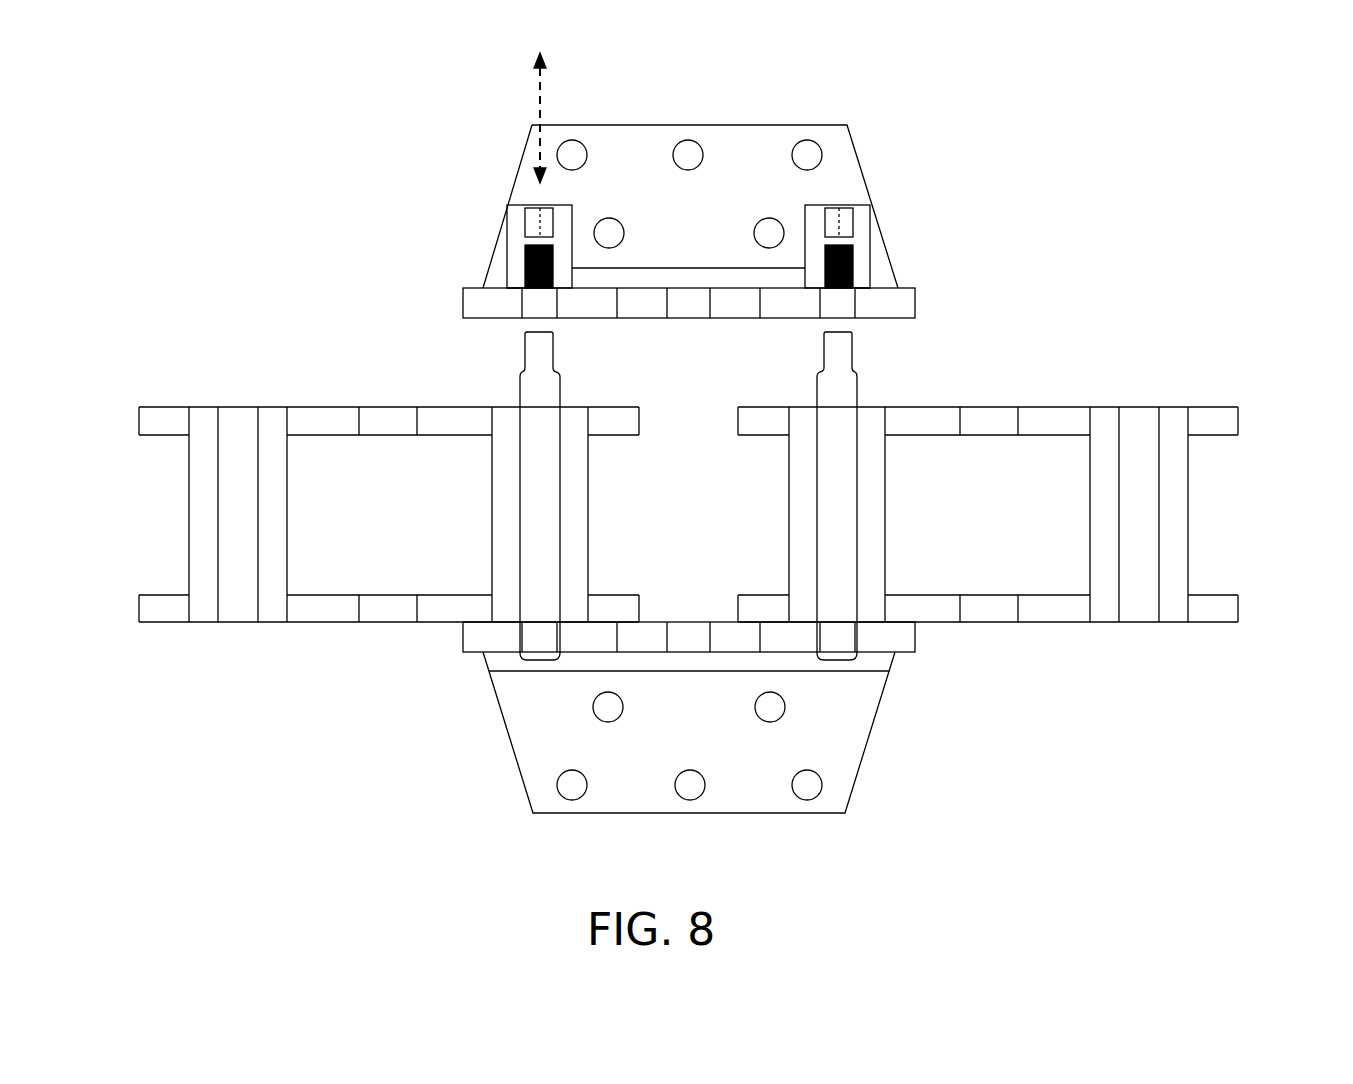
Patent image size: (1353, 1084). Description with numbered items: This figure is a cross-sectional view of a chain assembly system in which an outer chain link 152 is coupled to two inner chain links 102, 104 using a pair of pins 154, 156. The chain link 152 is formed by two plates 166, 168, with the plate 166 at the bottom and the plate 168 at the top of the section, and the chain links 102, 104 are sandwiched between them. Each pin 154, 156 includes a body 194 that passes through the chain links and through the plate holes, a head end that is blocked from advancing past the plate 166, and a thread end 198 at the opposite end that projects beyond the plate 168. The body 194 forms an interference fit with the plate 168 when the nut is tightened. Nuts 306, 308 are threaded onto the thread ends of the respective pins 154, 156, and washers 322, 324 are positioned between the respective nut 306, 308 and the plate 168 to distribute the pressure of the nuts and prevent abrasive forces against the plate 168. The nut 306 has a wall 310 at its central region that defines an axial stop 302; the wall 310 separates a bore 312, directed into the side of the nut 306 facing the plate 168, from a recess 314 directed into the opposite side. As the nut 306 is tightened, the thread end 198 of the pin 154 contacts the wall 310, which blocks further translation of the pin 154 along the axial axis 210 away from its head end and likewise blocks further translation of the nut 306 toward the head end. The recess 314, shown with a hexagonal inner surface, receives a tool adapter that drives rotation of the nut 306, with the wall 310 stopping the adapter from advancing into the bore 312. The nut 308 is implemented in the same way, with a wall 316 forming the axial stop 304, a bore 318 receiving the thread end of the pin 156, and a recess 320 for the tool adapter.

The chain link 102 is at (200, 383).
The chain link 104 is at (1200, 377).
The chain link 152 is at (805, 88).
The pin 154 is at (460, 496).
The pin 156 is at (838, 533).
The plate 166 is at (653, 795).
The plate 168 is at (780, 305).
The body 194 is at (547, 468).
The thread end 198 is at (543, 350).
The axial axis 210 is at (537, 107).
The axial stop 302 is at (424, 235).
The axial stop 304 is at (970, 243).
The nut 306 is at (515, 240).
The nut 308 is at (870, 262).
The wall 310 is at (540, 240).
The bore 312 is at (530, 268).
The recess 314 is at (523, 212).
The wall 316 is at (845, 242).
The bore 318 is at (855, 277).
The recess 320 is at (853, 223).
The washer 322 is at (512, 288).
The washer 324 is at (867, 287).